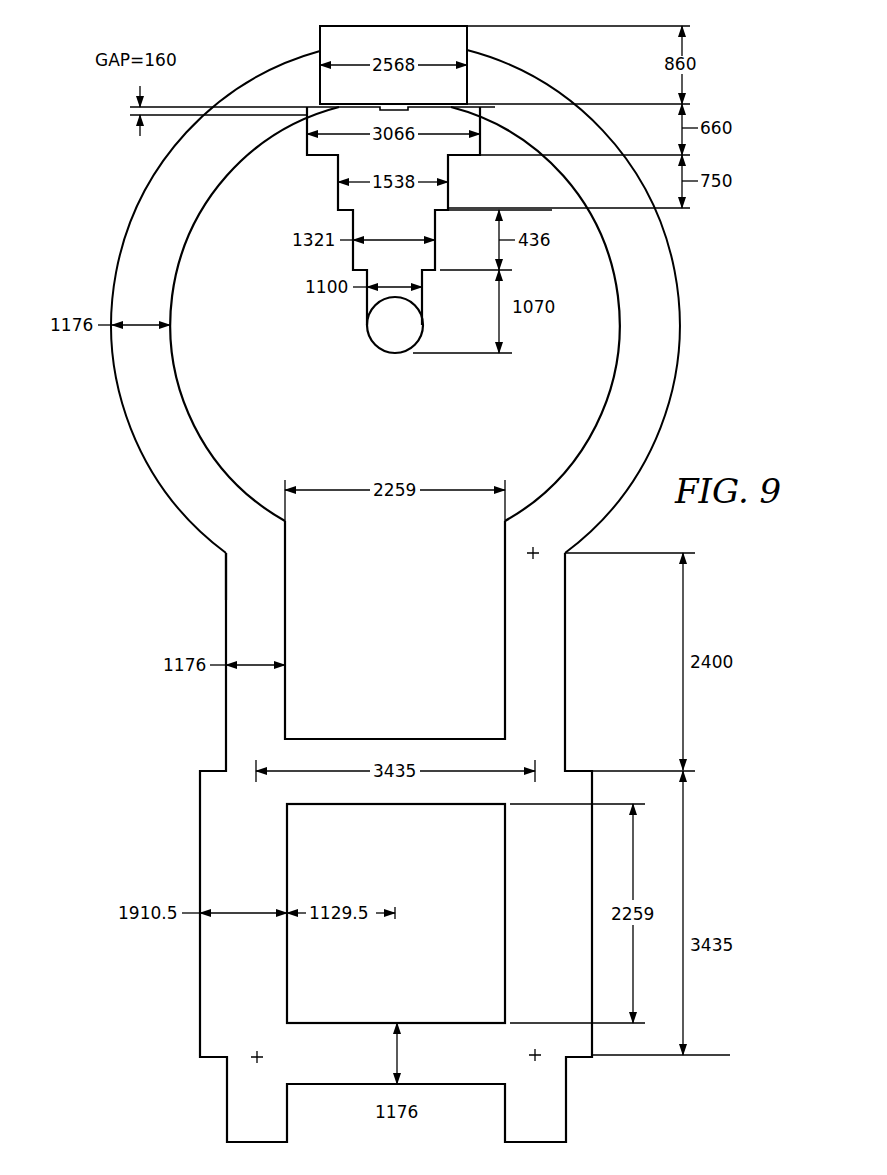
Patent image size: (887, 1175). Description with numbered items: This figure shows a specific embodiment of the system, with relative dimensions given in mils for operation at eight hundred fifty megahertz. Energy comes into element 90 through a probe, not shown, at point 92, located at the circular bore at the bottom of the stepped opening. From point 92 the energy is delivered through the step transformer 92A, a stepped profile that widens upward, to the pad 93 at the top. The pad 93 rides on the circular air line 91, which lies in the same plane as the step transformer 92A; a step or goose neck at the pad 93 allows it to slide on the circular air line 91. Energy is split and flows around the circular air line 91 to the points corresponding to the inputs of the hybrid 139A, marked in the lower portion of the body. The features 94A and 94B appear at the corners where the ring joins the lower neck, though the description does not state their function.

The element 90 is at (82, 262).
The circular air line 91 is at (679, 298).
The point 92 is at (398, 351).
The step transformer 92A is at (338, 199).
The pad 93 is at (320, 44).
The right neck corner 94A is at (541, 545).
The left neck corner 94B is at (242, 546).
The hybrid 139A is at (420, 879).